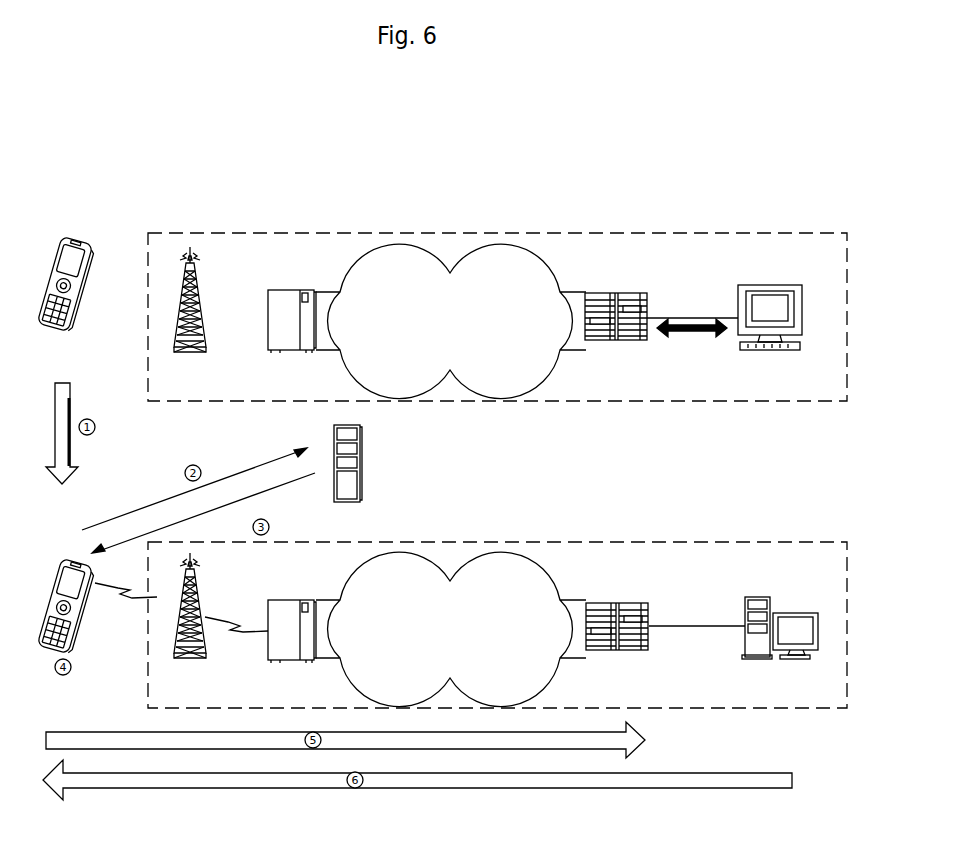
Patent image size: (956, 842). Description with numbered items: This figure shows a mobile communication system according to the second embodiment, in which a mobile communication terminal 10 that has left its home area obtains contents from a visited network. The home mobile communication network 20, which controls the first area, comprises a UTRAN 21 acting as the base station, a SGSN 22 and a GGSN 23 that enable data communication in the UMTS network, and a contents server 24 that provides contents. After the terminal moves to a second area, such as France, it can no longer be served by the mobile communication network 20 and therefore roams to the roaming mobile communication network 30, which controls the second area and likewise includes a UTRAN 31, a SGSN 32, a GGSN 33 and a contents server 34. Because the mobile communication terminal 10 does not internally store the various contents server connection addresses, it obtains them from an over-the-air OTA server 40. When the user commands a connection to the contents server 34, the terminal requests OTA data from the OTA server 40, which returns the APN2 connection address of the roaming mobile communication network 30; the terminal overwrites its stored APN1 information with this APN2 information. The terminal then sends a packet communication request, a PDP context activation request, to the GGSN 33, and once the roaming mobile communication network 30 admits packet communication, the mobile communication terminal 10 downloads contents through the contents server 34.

The mobile communication terminal 10 is at (84, 222).
The mobile communication network 20 is at (318, 222).
The UTRAN 21 is at (189, 318).
The SGSN 22 is at (292, 339).
The GGSN 23 is at (613, 341).
The contents server 24 is at (767, 339).
The roaming mobile communication network 30 is at (800, 732).
The UTRAN 31 is at (189, 626).
The SGSN 32 is at (292, 651).
The GGSN 33 is at (617, 648).
The contents server 34 is at (771, 651).
The OTA server 40 is at (510, 464).